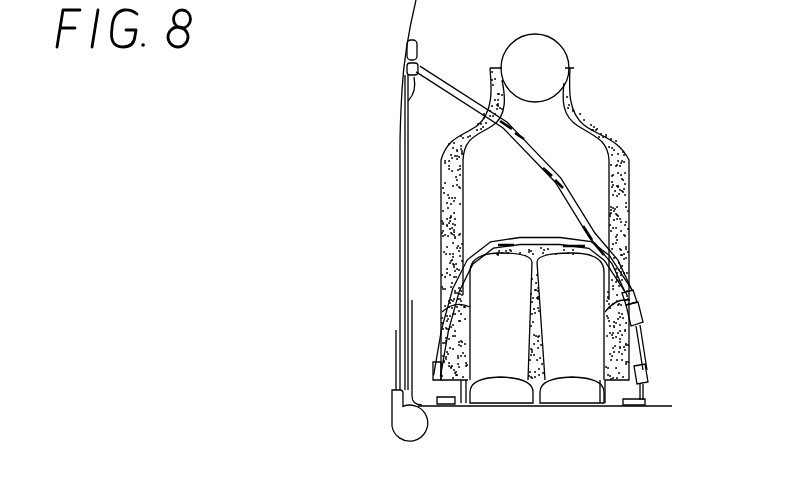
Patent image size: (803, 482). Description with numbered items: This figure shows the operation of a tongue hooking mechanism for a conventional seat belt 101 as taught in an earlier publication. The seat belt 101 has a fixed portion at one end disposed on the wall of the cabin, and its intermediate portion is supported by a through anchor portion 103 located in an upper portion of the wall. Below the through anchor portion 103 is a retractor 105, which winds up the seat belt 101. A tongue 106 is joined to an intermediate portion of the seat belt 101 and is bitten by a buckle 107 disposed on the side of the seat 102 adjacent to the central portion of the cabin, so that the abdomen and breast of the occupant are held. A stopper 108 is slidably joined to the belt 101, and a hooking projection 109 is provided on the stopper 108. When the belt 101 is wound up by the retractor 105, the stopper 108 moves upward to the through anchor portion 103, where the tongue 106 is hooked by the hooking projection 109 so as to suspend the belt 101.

The seat belt 101 is at (400, 229).
The seat 102 is at (631, 211).
The through anchor portion 103 is at (418, 45).
The retractor 105 is at (392, 421).
The tongue 106 is at (640, 296).
The buckle 107 is at (642, 318).
The stopper 108 is at (408, 100).
The hooking projection 109 is at (420, 66).